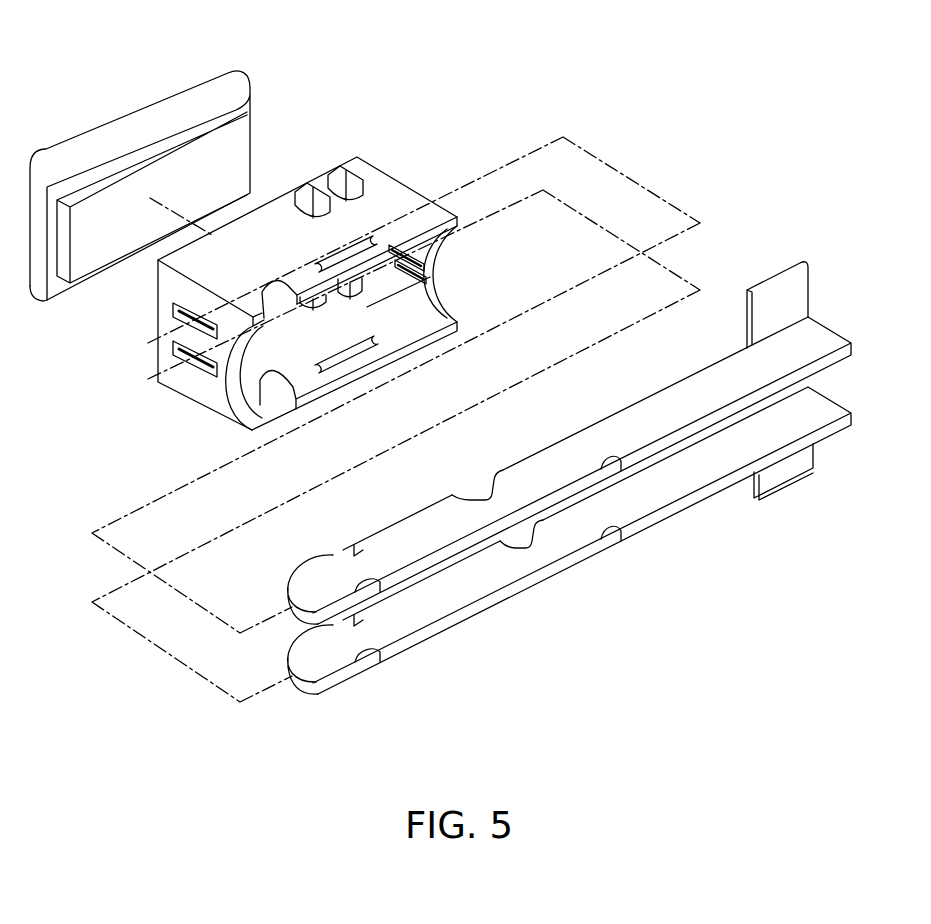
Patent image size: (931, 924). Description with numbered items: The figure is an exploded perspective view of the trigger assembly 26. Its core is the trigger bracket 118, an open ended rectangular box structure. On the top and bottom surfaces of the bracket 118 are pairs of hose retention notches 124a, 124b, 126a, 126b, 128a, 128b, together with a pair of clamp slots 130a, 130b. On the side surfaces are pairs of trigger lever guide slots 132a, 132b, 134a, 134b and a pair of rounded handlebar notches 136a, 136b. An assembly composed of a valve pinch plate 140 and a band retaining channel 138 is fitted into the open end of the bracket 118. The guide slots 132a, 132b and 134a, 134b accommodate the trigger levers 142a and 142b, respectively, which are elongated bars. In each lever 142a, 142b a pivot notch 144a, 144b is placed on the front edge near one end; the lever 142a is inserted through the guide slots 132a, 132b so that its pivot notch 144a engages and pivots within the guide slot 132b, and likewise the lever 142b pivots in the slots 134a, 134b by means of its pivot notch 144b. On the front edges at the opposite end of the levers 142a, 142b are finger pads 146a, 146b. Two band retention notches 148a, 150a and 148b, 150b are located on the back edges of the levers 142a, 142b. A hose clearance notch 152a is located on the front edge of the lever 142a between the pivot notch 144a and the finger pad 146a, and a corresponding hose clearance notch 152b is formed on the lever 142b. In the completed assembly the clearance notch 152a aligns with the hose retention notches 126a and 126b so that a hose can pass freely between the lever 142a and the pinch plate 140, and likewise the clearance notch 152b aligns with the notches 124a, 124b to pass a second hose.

The trigger assembly 26 is at (681, 107).
The trigger bracket 118 is at (393, 207).
The hose retention notch 124a is at (350, 189).
The hose retention notch 124b is at (349, 285).
The hose retention notch 126a is at (317, 206).
The hose retention notch 126b is at (313, 307).
The hose retention notch 128a is at (283, 277).
The hose retention notch 128b is at (290, 392).
The clamp slot 130a is at (343, 259).
The clamp slot 130b is at (340, 361).
The trigger lever guide slot 132a is at (427, 251).
The trigger lever guide slot 132b is at (180, 316).
The trigger lever guide slot 134a is at (413, 273).
The trigger lever guide slot 134b is at (180, 352).
The rounded handlebar notch 136a is at (447, 298).
The rounded handlebar notch 136b is at (243, 400).
The band retaining channel 138 is at (180, 103).
The valve pinch plate 140 is at (227, 140).
The trigger lever 142a is at (725, 382).
The trigger lever 142b is at (693, 470).
The pivot notch 144a is at (380, 551).
The pivot notch 144b is at (357, 618).
The finger pad 146a is at (783, 302).
The finger pad 146b is at (800, 463).
The band retention notch 148a is at (356, 590).
The band retention notch 148b is at (367, 660).
The band retention notch 150a is at (612, 470).
The band retention notch 150b is at (612, 540).
The hose clearance notch 152a is at (520, 515).
The hose clearance notch 152b is at (530, 546).